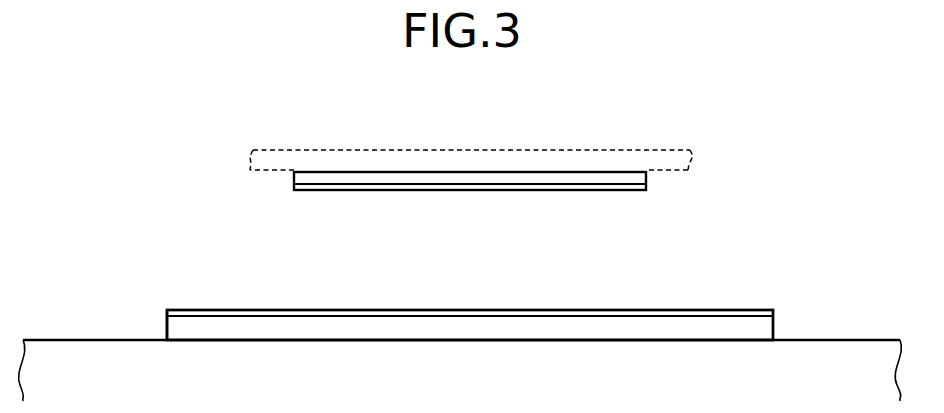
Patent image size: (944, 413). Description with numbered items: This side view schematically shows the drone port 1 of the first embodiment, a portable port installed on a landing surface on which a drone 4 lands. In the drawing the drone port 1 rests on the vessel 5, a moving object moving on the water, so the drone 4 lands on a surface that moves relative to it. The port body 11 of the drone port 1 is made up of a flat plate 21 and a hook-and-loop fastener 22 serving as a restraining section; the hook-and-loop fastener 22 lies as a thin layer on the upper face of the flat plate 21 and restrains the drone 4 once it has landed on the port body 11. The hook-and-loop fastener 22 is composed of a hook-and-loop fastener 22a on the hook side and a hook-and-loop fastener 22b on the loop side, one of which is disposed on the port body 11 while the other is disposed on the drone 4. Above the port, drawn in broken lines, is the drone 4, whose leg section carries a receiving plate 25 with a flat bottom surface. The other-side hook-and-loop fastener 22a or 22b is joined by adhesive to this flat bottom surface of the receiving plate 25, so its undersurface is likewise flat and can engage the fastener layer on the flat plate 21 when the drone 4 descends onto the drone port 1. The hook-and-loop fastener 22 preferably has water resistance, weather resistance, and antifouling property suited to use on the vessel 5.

The drone port 1 is at (762, 238).
The drone 4 is at (537, 150).
The vessel 5 is at (78, 340).
The port body 11 is at (163, 302).
The flat plate 21 is at (774, 330).
The hook-and-loop fastener 22 is at (470, 250).
The hook-and-loop fastener on the hook side 22a is at (470, 187).
The hook-and-loop fastener on the loop side 22b is at (470, 313).
The receiving plate 25 is at (294, 174).